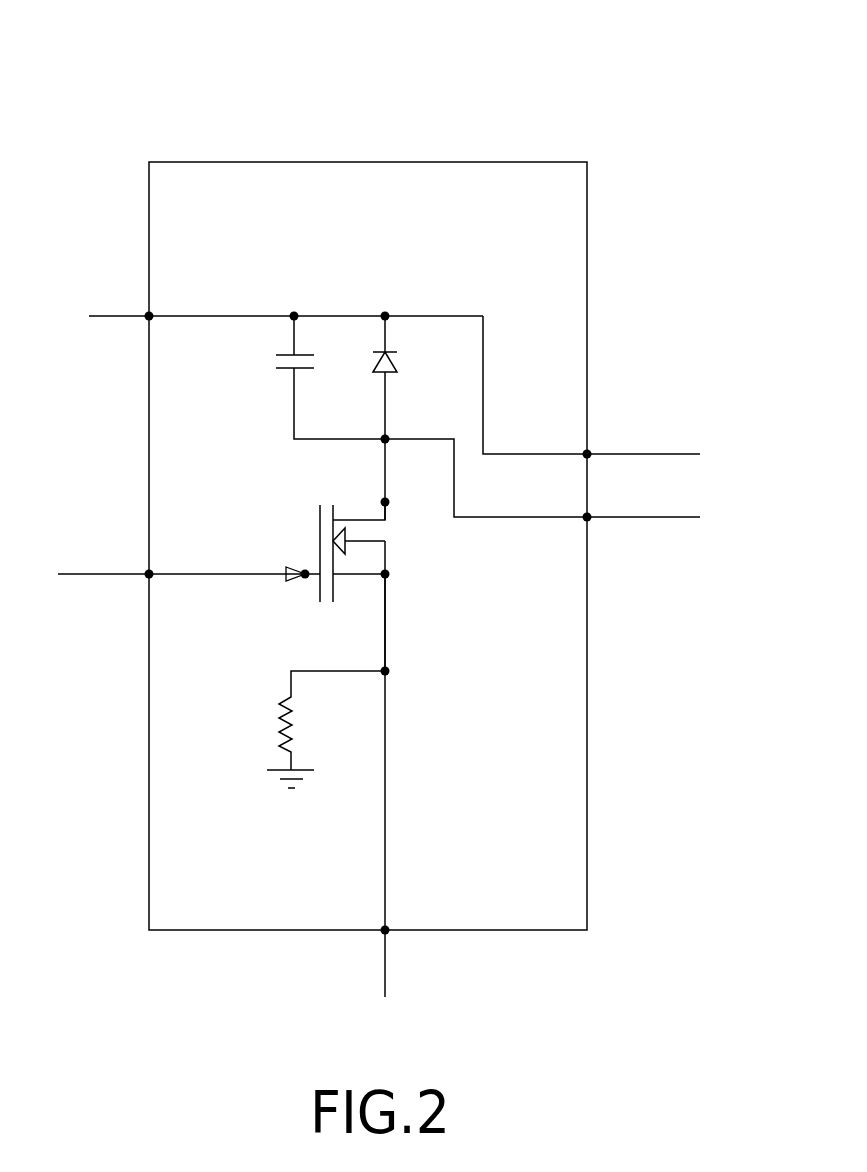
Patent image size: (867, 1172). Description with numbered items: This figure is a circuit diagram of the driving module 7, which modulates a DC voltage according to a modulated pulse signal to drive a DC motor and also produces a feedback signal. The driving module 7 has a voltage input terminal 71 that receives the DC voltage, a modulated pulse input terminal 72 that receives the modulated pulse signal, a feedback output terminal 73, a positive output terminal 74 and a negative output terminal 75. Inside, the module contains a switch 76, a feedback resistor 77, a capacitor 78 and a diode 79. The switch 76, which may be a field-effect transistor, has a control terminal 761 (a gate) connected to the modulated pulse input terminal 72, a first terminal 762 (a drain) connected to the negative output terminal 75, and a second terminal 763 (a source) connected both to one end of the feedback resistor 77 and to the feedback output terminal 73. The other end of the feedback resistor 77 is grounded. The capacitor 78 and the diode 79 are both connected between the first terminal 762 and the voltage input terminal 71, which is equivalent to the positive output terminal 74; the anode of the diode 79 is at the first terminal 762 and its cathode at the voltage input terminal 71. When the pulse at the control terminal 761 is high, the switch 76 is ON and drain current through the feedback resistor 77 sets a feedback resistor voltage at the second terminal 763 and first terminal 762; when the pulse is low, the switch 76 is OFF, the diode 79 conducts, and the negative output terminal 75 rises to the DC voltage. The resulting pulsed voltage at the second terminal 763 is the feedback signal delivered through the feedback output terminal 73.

The driving module 7 is at (380, 162).
The voltage input terminal 71 is at (149, 316).
The modulated pulse input terminal 72 is at (149, 574).
The feedback output terminal 73 is at (385, 930).
The positive output terminal 74 is at (587, 454).
The negative output terminal 75 is at (587, 517).
The switch 76 is at (313, 563).
The control terminal 761 is at (305, 574).
The first terminal 762 is at (385, 502).
The second terminal 763 is at (385, 574).
The feedback resistor 77 is at (307, 710).
The capacitor 78 is at (260, 359).
The diode 79 is at (408, 362).